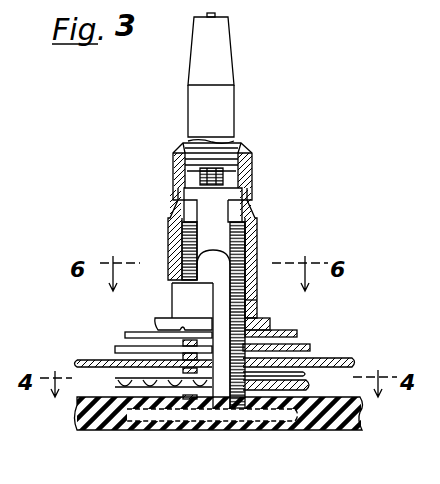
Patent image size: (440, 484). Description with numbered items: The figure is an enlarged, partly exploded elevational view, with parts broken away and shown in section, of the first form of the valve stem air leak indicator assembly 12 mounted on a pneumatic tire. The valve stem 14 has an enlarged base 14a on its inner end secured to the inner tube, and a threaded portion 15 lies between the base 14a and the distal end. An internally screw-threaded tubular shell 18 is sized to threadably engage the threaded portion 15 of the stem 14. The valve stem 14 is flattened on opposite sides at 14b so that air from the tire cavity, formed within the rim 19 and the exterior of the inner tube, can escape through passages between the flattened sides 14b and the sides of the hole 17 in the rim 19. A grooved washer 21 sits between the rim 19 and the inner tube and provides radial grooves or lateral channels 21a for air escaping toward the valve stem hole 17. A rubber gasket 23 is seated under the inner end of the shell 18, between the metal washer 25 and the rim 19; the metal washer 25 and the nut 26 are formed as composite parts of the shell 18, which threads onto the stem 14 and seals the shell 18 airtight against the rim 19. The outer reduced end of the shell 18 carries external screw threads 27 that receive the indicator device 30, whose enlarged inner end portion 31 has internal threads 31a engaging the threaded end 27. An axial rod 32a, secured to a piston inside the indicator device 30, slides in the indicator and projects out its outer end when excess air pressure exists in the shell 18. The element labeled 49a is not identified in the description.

The valve stem air leak indicator assembly 12 is at (160, 235).
The valve stem 14 is at (222, 201).
The enlarged base 14a is at (340, 449).
The flattened sides 14b is at (212, 285).
The threaded portion 15 is at (257, 300).
The valve stem hole 17 is at (310, 356).
The tubular shell 18 is at (256, 240).
The rim 19 is at (356, 360).
The grooved washer 21 is at (116, 382).
The radial grooves or lateral channels 21a is at (360, 394).
The rubber gasket 23 is at (305, 348).
The metal washer 25 is at (300, 333).
The nut 26 is at (272, 320).
The external screw threads 27 is at (173, 207).
The indicator device 30 is at (243, 103).
The enlarged inner end portion 31 is at (252, 174).
The internal threads 31a is at (312, 160).
The axial rod 32a is at (292, 23).
The screw 49a is at (186, 190).